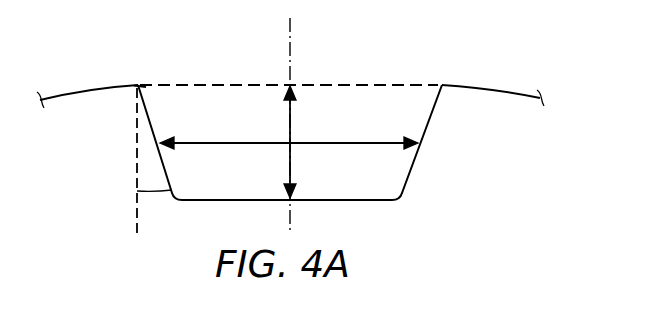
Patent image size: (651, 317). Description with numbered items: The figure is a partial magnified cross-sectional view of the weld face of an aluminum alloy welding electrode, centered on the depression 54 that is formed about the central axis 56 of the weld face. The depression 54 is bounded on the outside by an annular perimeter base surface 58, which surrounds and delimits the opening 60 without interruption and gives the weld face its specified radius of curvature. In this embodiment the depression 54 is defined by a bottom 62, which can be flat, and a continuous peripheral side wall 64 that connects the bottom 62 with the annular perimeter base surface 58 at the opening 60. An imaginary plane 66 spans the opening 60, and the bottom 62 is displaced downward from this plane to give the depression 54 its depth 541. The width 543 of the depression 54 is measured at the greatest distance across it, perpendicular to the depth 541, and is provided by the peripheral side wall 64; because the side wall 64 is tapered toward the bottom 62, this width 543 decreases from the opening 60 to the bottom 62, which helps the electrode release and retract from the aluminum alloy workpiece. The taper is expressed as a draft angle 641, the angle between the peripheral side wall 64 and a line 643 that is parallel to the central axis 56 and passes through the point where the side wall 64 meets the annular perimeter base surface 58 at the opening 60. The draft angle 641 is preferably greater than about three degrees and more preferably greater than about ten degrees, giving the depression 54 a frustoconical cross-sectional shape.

The depression 54 is at (357, 130).
The central axis 56 is at (292, 48).
The annular perimeter base surface 58 is at (95, 88).
The opening 60 is at (140, 84).
The bottom 62 is at (253, 198).
The continuous peripheral side wall 64 is at (150, 120).
The imaginary plane 66 is at (245, 83).
The depth 541 is at (292, 152).
The width 543 is at (236, 142).
The draft angle 641 is at (152, 191).
The line 643 is at (135, 148).